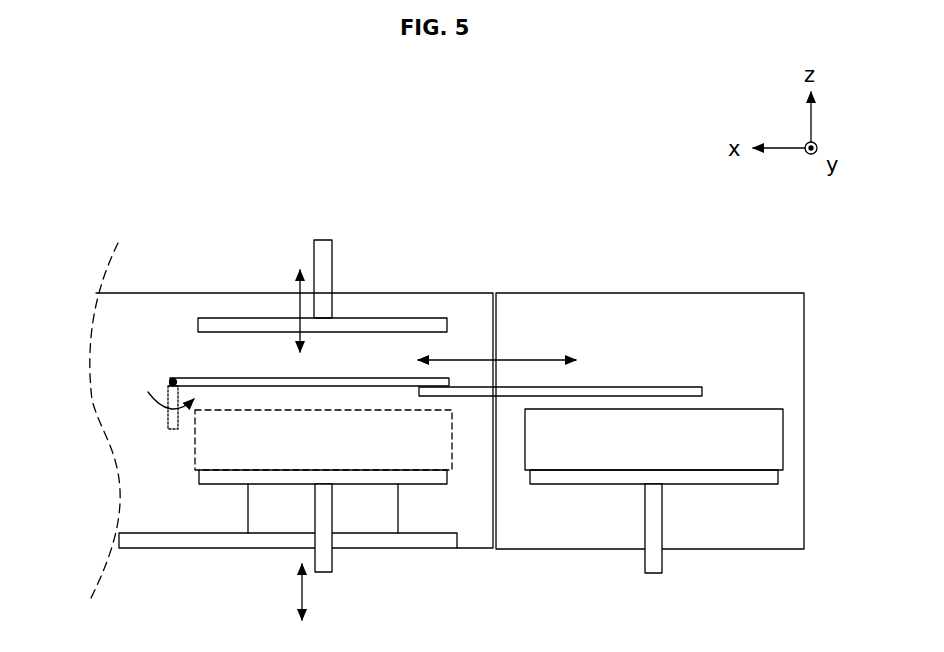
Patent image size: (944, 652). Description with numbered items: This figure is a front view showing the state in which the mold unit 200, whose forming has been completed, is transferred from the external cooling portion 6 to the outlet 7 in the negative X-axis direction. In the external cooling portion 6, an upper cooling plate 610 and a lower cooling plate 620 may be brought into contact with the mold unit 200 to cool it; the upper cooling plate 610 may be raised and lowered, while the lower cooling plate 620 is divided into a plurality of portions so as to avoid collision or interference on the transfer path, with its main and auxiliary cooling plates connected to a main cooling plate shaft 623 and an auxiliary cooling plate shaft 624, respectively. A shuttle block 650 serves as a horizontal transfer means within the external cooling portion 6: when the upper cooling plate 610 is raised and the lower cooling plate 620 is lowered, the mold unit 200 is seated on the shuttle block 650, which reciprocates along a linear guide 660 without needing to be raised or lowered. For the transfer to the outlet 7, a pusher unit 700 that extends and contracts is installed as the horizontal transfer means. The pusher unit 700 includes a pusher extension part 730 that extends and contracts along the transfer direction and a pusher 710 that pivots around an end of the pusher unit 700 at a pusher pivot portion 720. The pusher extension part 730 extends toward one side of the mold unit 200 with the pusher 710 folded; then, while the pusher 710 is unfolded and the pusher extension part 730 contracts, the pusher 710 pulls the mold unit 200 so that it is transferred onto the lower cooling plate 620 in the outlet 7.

The external cooling portion 6 is at (445, 293).
The outlet 7 is at (590, 293).
The mold unit 200 is at (195, 447).
The upper cooling plate 610 is at (383, 318).
The lower cooling plate 620 is at (232, 488).
The main cooling plate shaft 623 is at (539, 554).
The auxiliary cooling plate shaft 624 is at (335, 563).
The shuttle block 650 is at (283, 517).
The linear guide 660 is at (145, 540).
The pusher unit 700 is at (658, 385).
The pusher 710 is at (168, 423).
The pusher pivot portion 720 is at (173, 380).
The pusher extension part 730 is at (229, 378).